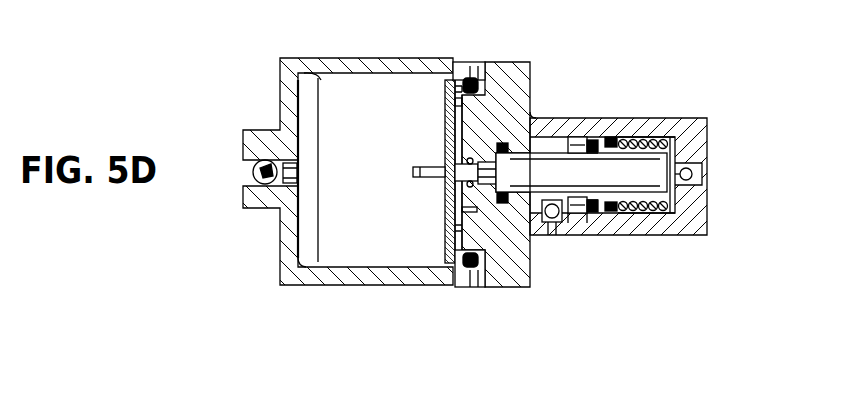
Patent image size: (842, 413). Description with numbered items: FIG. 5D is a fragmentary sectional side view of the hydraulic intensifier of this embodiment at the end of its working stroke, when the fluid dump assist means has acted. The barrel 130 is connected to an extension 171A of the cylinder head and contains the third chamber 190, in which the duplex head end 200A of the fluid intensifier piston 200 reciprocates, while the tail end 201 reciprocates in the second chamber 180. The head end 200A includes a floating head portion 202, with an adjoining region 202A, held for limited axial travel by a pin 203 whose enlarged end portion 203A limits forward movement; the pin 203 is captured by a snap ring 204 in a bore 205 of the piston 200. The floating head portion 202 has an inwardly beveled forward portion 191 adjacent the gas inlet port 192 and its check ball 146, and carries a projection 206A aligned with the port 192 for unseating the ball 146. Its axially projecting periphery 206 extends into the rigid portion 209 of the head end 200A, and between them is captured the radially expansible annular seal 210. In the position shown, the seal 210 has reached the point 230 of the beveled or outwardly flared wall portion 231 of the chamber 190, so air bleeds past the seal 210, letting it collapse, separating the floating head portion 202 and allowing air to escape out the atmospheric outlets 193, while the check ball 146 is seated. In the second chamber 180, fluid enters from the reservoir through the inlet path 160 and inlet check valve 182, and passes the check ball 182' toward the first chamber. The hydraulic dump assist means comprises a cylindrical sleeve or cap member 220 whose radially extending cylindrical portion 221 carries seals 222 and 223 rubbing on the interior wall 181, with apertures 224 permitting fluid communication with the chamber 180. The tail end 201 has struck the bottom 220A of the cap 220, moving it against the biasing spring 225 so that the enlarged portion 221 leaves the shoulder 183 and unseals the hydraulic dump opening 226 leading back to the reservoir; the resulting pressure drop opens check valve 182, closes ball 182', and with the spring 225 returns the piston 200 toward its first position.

The barrel 130 is at (300, 70).
The inwardly beveled forward portion 191 is at (322, 78).
The third chamber 190 is at (347, 76).
The gas inlet port 192 is at (252, 156).
The check ball 146 is at (257, 176).
The floating head portion 202 is at (450, 285).
The flange portion 202A is at (458, 228).
The fluid intensifier piston 200 is at (520, 62).
The duplex head end 200A is at (507, 287).
The extension of cylinder head 171A is at (531, 107).
The point of beveled wall portion 230 is at (456, 66).
The beveled or outwardly flared wall portion 231 is at (456, 290).
The atmospheric outlets 193 is at (468, 76).
The annular seal 210 is at (473, 70).
The axially projecting periphery 206 is at (455, 90).
The rigid portion 209 is at (462, 104).
The snap ring 204 is at (453, 203).
The projection 206A is at (413, 172).
The bore 205 is at (447, 150).
The pin 203 is at (430, 168).
The enlarged end portion 203A is at (486, 173).
The cylindrical sleeve or cap member 220 is at (675, 136).
The bottom of cap 220A is at (703, 147).
The tail end 201 is at (683, 200).
The biasing spring 225 is at (673, 220).
The check ball 182' is at (716, 169).
The seal 223 is at (578, 137).
The seal 222 is at (600, 138).
The radially extending cylindrical portion 221 is at (588, 140).
The apertures 224 is at (612, 137).
The second chamber 180 is at (651, 137).
The interior wall 181 is at (673, 140).
The inlet path 160 is at (551, 222).
The inlet check valve 182 is at (567, 257).
The hydraulic dump opening 226 is at (575, 223).
The shoulder 183 is at (576, 212).